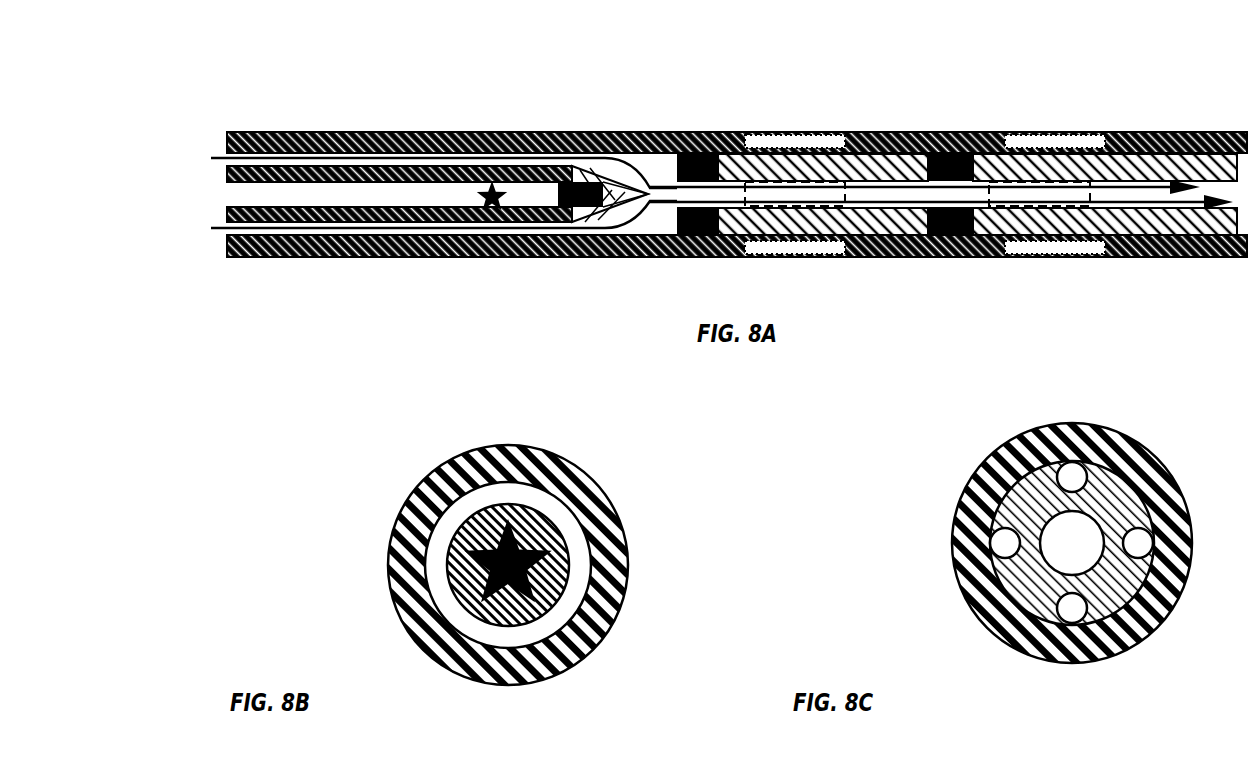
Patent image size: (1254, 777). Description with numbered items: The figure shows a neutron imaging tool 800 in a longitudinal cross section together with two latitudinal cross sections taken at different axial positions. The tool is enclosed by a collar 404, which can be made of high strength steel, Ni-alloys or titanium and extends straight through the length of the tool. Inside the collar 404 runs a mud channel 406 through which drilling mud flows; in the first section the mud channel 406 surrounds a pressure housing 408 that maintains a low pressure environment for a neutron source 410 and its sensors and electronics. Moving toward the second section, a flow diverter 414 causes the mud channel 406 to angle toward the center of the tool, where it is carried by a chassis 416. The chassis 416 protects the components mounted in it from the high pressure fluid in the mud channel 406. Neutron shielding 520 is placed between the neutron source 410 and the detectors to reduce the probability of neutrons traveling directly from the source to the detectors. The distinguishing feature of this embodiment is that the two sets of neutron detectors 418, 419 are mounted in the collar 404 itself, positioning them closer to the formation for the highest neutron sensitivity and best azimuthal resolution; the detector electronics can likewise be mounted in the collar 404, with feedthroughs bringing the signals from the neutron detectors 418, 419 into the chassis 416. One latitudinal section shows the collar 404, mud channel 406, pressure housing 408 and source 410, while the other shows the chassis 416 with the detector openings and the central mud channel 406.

In FIG. 8A, the neutron imaging tool 800 is at (538, 92).
In FIG. 8A, the collar 404 is at (317, 132).
In FIG. 8B, the collar 404 is at (407, 552).
In FIG. 8A, the mud channel 406 is at (313, 230).
In FIG. 8B, the mud channel 406 is at (463, 510).
In FIG. 8C, the mud channel 406 is at (1078, 537).
In FIG. 8A, the pressure housing 408 is at (435, 165).
In FIG. 8B, the pressure housing 408 is at (493, 627).
In FIG. 8B, the neutron source 410 is at (527, 552).
In FIG. 8A, the flow diverter 414 is at (623, 200).
In FIG. 8A, the chassis 416 is at (738, 226).
In FIG. 8C, the chassis 416 is at (1028, 480).
In FIG. 8A, the neutron detectors 418 is at (1028, 183).
In FIG. 8C, the neutron detectors 418 is at (1072, 612).
In FIG. 8A, the neutron detectors 419 is at (803, 248).
In FIG. 8A, the neutron shielding 520 is at (733, 140).